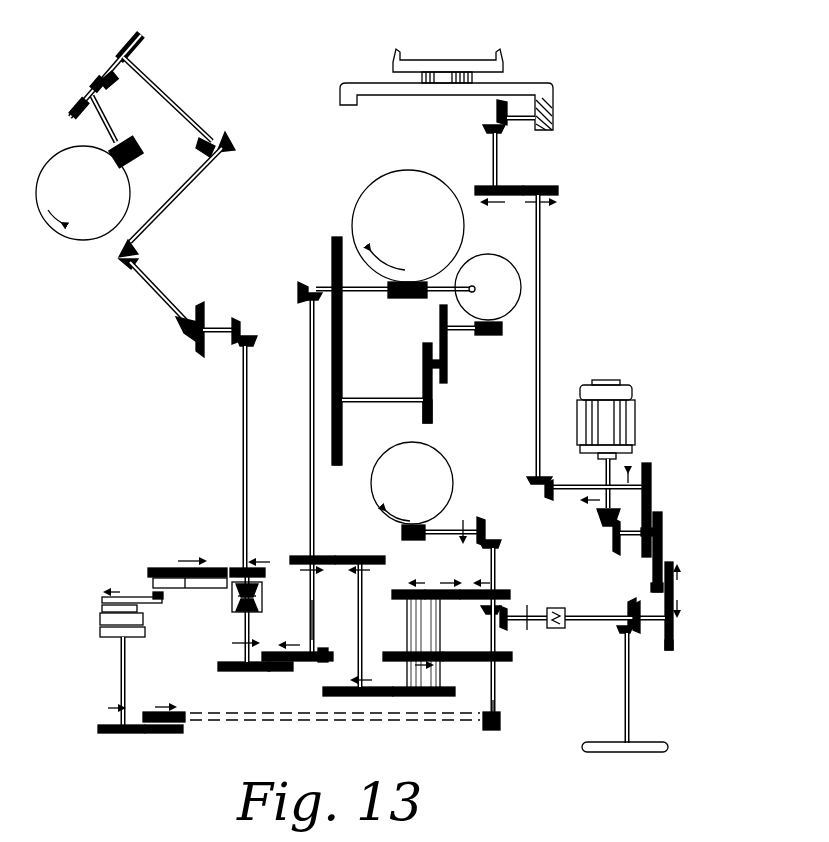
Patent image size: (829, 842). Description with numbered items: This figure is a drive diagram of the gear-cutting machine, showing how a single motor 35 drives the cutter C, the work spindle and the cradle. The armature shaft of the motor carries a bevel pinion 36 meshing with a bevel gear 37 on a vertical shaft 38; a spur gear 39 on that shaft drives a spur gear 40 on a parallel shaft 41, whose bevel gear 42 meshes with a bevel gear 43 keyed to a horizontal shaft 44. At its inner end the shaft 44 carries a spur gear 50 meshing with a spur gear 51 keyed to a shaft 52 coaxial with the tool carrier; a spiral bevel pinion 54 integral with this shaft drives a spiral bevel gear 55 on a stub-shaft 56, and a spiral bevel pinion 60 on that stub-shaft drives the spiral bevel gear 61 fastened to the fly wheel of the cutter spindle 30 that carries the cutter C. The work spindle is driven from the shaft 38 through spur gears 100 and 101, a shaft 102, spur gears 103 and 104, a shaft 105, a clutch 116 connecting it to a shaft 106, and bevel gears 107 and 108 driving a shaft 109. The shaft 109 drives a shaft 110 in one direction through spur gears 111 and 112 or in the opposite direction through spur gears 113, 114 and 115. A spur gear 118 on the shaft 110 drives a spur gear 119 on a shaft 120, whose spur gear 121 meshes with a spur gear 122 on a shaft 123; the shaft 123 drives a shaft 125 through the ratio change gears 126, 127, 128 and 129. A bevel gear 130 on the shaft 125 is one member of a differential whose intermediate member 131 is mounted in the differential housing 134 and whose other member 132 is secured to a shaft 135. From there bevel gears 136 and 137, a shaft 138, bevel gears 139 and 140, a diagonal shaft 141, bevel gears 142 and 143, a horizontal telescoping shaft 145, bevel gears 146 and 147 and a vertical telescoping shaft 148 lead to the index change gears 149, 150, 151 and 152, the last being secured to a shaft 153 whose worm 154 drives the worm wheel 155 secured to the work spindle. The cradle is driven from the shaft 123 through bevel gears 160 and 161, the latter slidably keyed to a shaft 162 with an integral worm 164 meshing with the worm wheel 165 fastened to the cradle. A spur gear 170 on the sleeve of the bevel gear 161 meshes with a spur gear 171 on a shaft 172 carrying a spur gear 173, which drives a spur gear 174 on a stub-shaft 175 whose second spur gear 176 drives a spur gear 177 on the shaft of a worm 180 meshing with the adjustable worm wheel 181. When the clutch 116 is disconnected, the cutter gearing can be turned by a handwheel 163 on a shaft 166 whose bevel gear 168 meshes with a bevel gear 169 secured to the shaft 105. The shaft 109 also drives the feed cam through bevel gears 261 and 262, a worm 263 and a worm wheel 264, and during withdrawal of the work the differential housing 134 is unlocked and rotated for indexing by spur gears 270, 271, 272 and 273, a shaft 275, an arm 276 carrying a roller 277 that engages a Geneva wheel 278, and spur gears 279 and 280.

The carriage C is at (500, 60).
The cutter spindle 30 is at (420, 78).
The spiral bevel gear 61 is at (348, 100).
The spiral bevel pinion 60 is at (550, 128).
The spiral bevel gear 55 is at (497, 108).
The spiral bevel pinion 54 is at (483, 128).
The stub-shaft 56 is at (520, 122).
The shaft 52 is at (498, 163).
The spur gear 51 is at (478, 186).
The spur gear 50 is at (558, 189).
The horizontal shaft 44 is at (541, 322).
The bevel gear 43 is at (530, 483).
The bevel gear 42 is at (548, 498).
The parallel shaft 41 is at (575, 485).
The spur gear 40 is at (652, 486).
The motor 35 is at (632, 418).
The bevel pinion 36 is at (602, 520).
The bevel gear 37 is at (614, 542).
The vertical shaft 38 is at (634, 536).
The spur gear 39 is at (648, 537).
The spur gear 100 is at (663, 528).
The spur gear 101 is at (652, 586).
The shaft 102 is at (636, 606).
The spur gear 103 is at (673, 568).
The spur gear 104 is at (669, 648).
The shaft 105 is at (590, 616).
The shaft 106 is at (532, 614).
The bevel gear 107 is at (505, 622).
The bevel gear 108 is at (488, 612).
The clutch 116 is at (556, 628).
The bevel gear 168 is at (622, 633).
The bevel gear 169 is at (636, 633).
The shaft 166 is at (630, 704).
The handwheel 163 is at (662, 745).
The shaft 110 is at (410, 624).
The shaft 109 is at (496, 686).
The spur gear 270 is at (494, 730).
The spur gear 111 is at (513, 656).
The spur gear 112 is at (394, 652).
The spur gear 113 is at (505, 588).
The spur gear 114 is at (456, 588).
The spur gear 115 is at (400, 589).
The spur gear 118 is at (452, 686).
The spur gear 119 is at (325, 692).
The shaft 120 is at (362, 610).
The spur gear 121 is at (365, 556).
The spur gear 122 is at (298, 556).
The shaft 123 is at (315, 606).
The shaft 125 is at (243, 628).
The ratio change gear 126 is at (316, 661).
The ratio change gear 127 is at (286, 652).
The ratio change gear 128 is at (280, 671).
The ratio change gear 129 is at (245, 671).
The bevel gear 130 is at (233, 608).
The intermediate differential member 131 is at (258, 590).
The differential member 132 is at (233, 586).
The differential housing 134 is at (258, 608).
The shaft 135 is at (243, 487).
The bevel gear 136 is at (254, 340).
The bevel gear 137 is at (238, 320).
The shaft 138 is at (216, 326).
The bevel gear 139 is at (199, 352).
The bevel gear 140 is at (180, 335).
The diagonal shaft 141 is at (160, 290).
The bevel gear 142 is at (120, 265).
The bevel gear 143 is at (119, 253).
The horizontal telescoping shaft 145 is at (176, 205).
The bevel gear 146 is at (230, 140).
The bevel gear 147 is at (200, 145).
The vertical telescoping shaft 148 is at (180, 98).
The spur gear 149 is at (140, 32).
The index change gear 150 is at (90, 82).
The index change gear 151 is at (110, 86).
The index change gear 152 is at (73, 112).
The shaft 153 is at (104, 118).
The worm 154 is at (126, 147).
The worm wheel 155 is at (70, 232).
The bevel gear 160 is at (306, 305).
The bevel gear 161 is at (300, 282).
The shaft 162 is at (372, 294).
The worm 164 is at (404, 300).
The worm wheel 165 is at (378, 200).
The spur gear 170 is at (332, 242).
The spur gear 171 is at (337, 462).
The shaft 172 is at (378, 404).
The spur gear 173 is at (432, 410).
The spur gear 174 is at (423, 350).
The stub-shaft 175 is at (437, 372).
The spur gear 176 is at (444, 364).
The spur gear 177 is at (440, 312).
The worm 180 is at (488, 335).
The worm wheel 181 is at (494, 262).
The bevel gear 261 is at (500, 544).
The bevel gear 262 is at (483, 527).
The worm 263 is at (412, 542).
The worm wheel 264 is at (448, 494).
The spur gear 271 is at (176, 712).
The spur gear 272 is at (166, 733).
The spur gear 273 is at (110, 733).
The shaft 275 is at (126, 680).
The arm 276 is at (148, 603).
The roller 277 is at (152, 593).
The Geneva wheel 278 is at (180, 588).
The spur gear 279 is at (162, 568).
The spur gear 280 is at (248, 568).